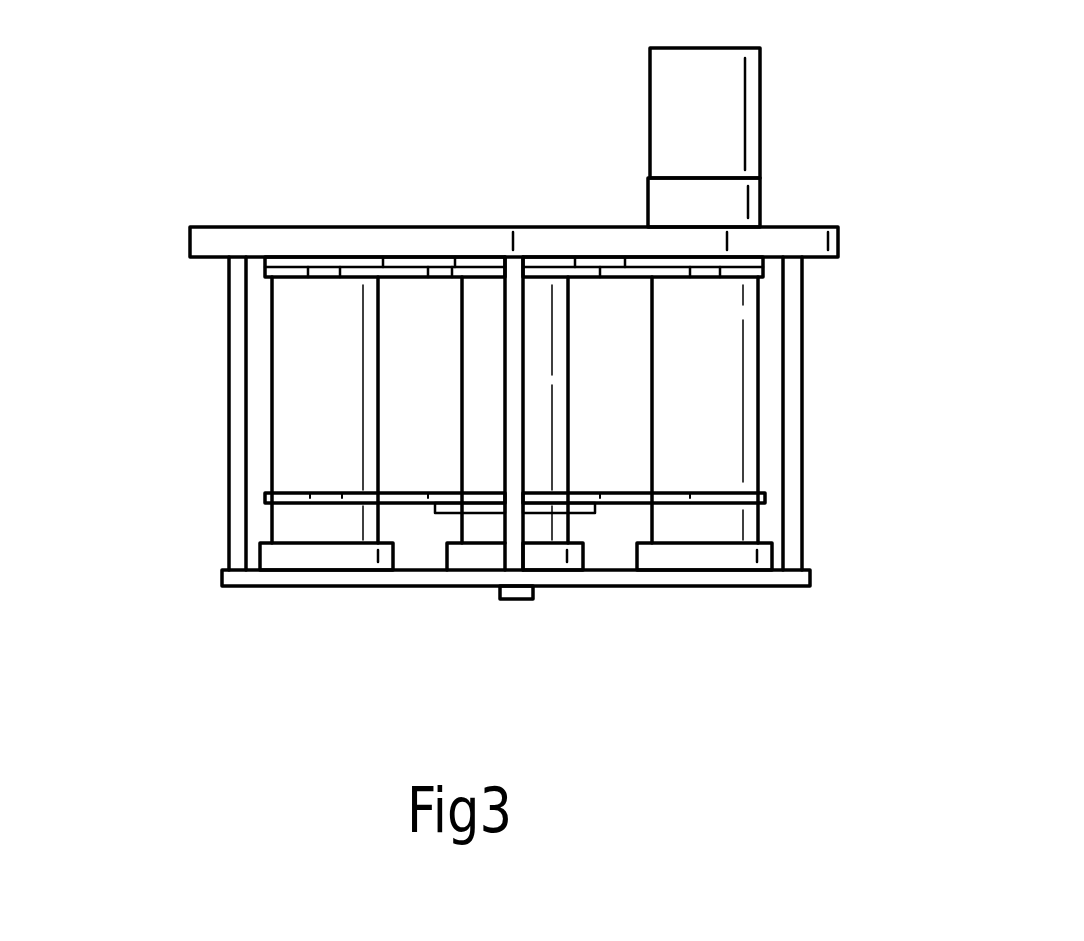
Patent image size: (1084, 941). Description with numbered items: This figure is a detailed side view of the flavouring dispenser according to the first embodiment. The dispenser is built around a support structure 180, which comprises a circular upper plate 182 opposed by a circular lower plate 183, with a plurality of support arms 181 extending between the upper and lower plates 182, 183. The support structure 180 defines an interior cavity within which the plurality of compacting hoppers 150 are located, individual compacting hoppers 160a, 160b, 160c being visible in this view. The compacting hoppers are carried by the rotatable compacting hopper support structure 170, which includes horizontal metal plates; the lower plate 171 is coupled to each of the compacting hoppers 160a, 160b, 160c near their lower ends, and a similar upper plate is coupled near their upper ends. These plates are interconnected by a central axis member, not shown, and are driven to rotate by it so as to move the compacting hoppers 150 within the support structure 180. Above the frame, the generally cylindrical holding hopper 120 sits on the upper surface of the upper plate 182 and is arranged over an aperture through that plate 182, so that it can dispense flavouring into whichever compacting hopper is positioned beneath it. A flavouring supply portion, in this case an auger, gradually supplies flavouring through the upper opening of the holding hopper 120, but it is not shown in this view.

The holding hopper 120 is at (648, 98).
The plurality of compacting hoppers 150 is at (457, 383).
The compacting hopper 160a is at (750, 405).
The compacting hopper 160b is at (570, 315).
The compacting hopper 160c is at (307, 447).
The rotatable compacting hopper support structure 170 is at (366, 508).
The lower plate 171 is at (405, 278).
The support structure 180 is at (485, 407).
The support arms 181 is at (803, 522).
The upper plate 182 is at (270, 232).
The lower plate 183 is at (253, 587).